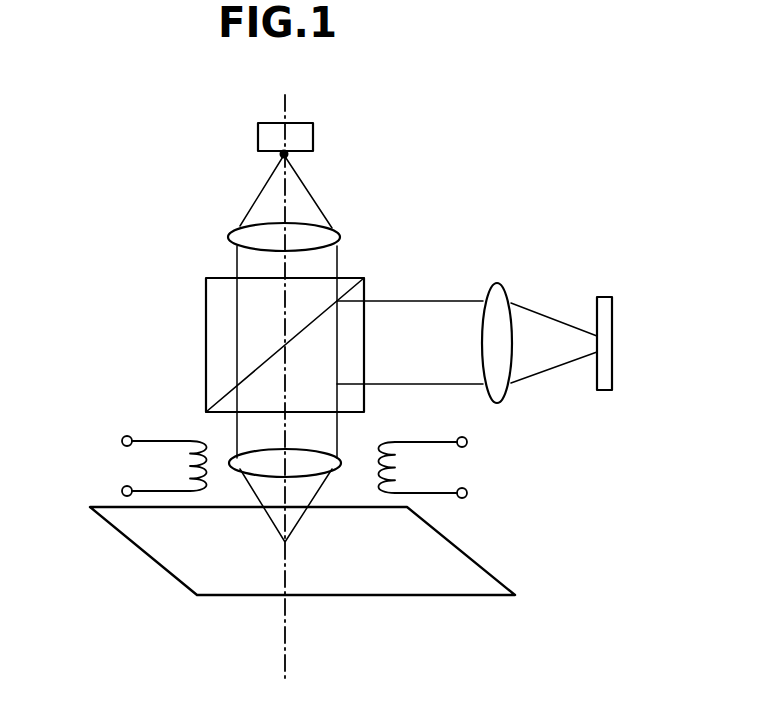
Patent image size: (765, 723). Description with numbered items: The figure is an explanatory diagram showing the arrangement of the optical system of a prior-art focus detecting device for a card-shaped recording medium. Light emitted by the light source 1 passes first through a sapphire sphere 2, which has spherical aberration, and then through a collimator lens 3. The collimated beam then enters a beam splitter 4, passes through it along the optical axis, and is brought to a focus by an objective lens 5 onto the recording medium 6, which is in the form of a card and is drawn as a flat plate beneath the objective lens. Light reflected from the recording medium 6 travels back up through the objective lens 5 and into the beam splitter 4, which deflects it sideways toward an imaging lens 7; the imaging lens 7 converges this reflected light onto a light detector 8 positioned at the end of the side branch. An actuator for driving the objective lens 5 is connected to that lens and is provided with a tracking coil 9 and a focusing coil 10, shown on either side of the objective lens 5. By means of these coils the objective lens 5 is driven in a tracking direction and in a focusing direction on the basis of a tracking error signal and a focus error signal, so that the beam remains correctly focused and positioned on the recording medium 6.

The light source 1 is at (314, 138).
The sapphire sphere 2 is at (290, 154).
The collimator lens 3 is at (341, 233).
The beam splitter 4 is at (216, 278).
The objective lens 5 is at (240, 455).
The recording medium 6 is at (138, 548).
The imaging lens 7 is at (500, 283).
The light detector 8 is at (605, 297).
The tracking coil 9 is at (148, 438).
The focusing coil 10 is at (437, 441).